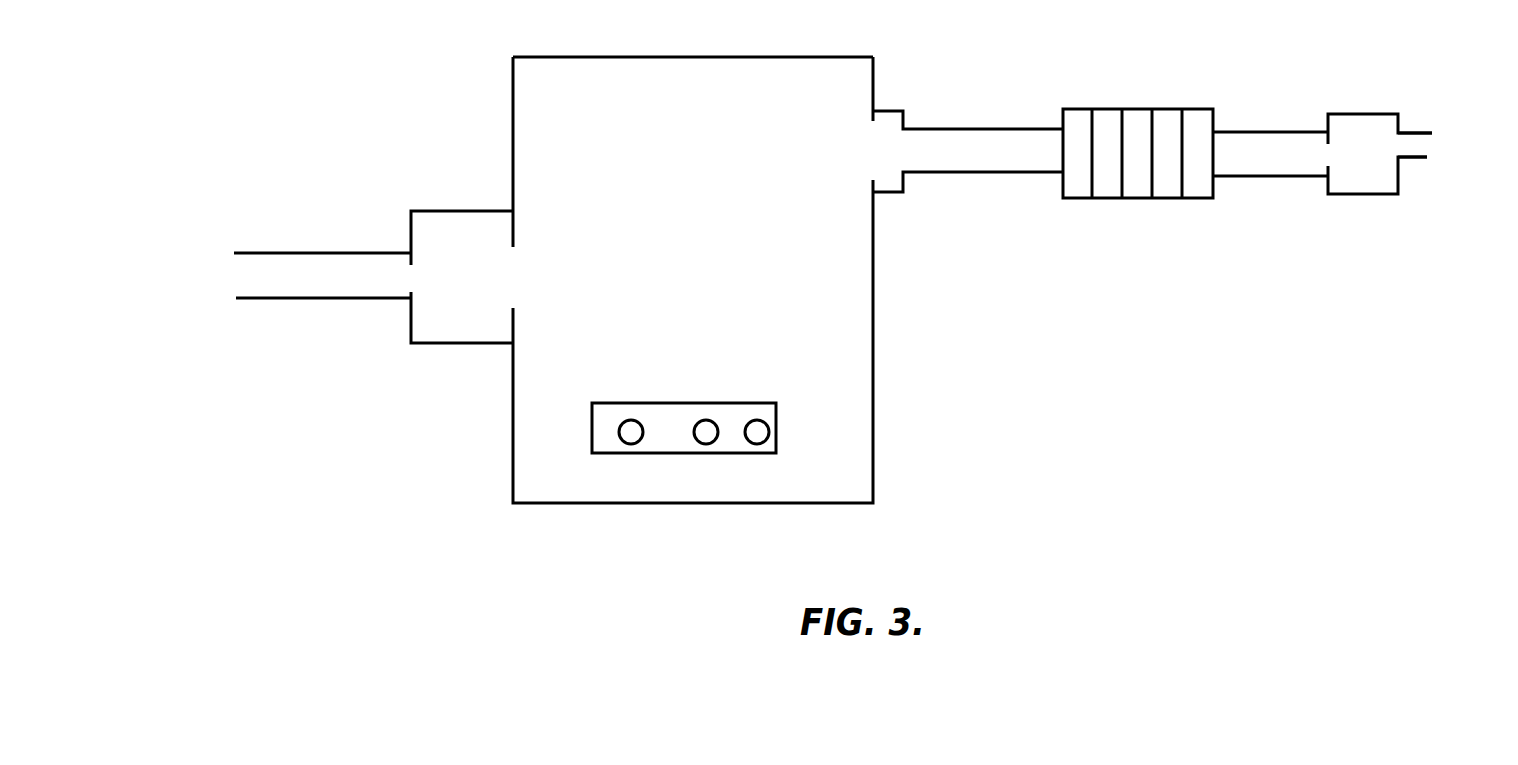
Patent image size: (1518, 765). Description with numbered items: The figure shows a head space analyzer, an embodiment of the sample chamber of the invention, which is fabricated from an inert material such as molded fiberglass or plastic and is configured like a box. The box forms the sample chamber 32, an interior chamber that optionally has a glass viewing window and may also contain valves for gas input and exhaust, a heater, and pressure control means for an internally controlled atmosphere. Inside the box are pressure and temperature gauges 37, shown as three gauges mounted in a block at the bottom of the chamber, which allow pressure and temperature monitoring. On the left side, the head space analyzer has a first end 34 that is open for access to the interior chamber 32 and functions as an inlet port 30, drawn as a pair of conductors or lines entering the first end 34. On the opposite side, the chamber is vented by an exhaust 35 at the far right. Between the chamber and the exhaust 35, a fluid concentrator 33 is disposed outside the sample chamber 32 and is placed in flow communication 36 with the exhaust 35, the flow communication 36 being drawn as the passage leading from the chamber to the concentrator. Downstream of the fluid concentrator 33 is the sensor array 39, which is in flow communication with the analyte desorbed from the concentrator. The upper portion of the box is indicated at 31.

The inlet port 30 is at (237, 270).
The housing top 31 is at (818, 55).
The sample chamber 32 is at (848, 321).
The fluid concentrator 33 is at (1143, 200).
The first end 34 is at (375, 287).
The exhaust 35 is at (1428, 148).
The flow communication 36 is at (983, 147).
The pressure and temperature gauges 37 is at (640, 441).
The sensor array 39 is at (1370, 186).